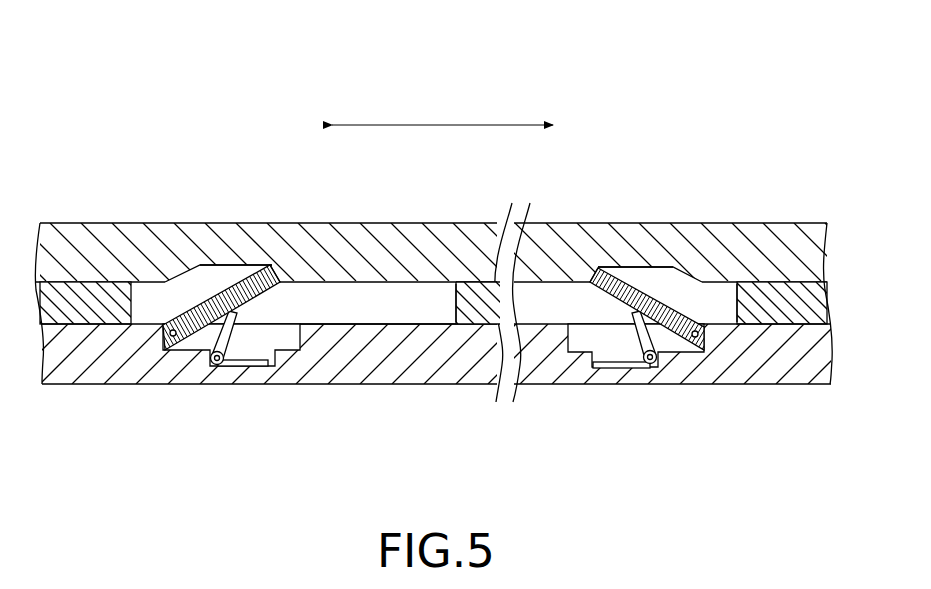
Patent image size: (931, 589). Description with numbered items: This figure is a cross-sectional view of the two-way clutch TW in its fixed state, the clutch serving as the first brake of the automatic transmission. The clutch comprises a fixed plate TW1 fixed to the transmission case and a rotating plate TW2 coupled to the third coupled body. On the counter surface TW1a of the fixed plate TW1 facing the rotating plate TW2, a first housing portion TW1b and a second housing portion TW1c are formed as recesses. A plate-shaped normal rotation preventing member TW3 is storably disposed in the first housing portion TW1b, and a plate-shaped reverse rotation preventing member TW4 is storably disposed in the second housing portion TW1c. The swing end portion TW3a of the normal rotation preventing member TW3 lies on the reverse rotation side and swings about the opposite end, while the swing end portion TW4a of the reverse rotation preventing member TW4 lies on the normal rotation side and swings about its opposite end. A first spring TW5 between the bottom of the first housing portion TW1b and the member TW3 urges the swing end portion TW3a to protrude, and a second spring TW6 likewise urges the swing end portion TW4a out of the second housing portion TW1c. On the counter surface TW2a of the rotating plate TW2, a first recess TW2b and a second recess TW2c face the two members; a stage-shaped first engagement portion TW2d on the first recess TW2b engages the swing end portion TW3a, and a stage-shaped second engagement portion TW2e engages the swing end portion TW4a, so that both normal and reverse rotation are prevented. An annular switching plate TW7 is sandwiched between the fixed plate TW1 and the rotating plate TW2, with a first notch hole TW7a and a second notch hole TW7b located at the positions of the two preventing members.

The two-way clutch TW is at (187, 76).
The fixed plate TW1 is at (318, 373).
The counter surface TW1a is at (412, 318).
The first housing portion TW1b is at (583, 344).
The second housing portion TW1c is at (272, 343).
The rotating plate TW2 is at (717, 248).
The counter surface TW2a is at (146, 297).
The first recess TW2b is at (672, 266).
The second recess TW2c is at (204, 266).
The first engagement portion TW2d is at (620, 264).
The second engagement portion TW2e is at (262, 265).
The normal rotation preventing member TW3 is at (692, 349).
The swing end portion TW3a is at (596, 268).
The reverse rotation preventing member TW4 is at (189, 338).
The swing end portion TW4a is at (281, 282).
The first spring TW5 is at (648, 369).
The second spring TW6 is at (223, 367).
The switching plate TW7 is at (493, 303).
The first notch hole TW7a is at (733, 317).
The second notch hole TW7b is at (455, 298).